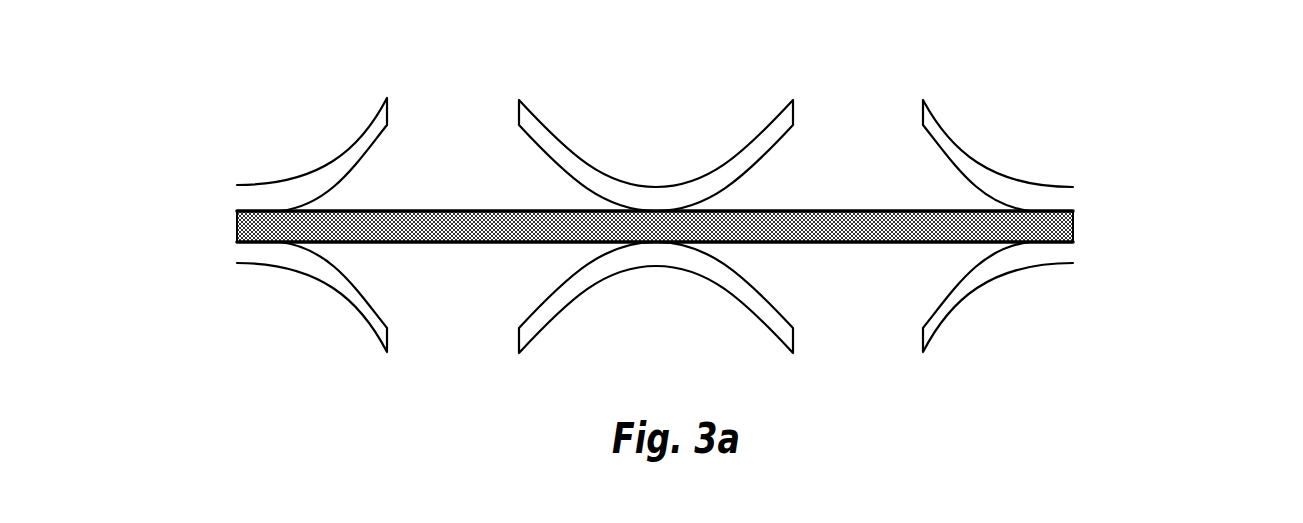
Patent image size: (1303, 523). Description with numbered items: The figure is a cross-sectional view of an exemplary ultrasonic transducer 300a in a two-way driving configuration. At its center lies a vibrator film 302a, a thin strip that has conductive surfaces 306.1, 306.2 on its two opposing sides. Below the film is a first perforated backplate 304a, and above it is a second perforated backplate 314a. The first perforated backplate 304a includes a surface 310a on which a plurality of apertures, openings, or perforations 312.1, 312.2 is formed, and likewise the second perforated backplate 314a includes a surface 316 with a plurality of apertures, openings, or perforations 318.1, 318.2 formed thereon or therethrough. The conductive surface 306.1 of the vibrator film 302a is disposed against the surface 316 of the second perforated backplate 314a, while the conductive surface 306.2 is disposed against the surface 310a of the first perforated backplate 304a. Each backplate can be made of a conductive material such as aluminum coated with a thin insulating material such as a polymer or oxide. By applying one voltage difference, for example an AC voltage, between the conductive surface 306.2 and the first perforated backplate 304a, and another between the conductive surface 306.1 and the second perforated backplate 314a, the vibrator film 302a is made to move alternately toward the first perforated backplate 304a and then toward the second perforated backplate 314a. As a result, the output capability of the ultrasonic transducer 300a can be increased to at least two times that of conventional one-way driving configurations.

The ultrasonic transducer 300a is at (208, 78).
The vibrator film 302a is at (742, 229).
The first perforated backplate 304a is at (208, 254).
The conductive surface 306.1 is at (1073, 211).
The conductive surface 306.2 is at (1073, 242).
The surface 310a is at (363, 294).
The perforation 312.1 is at (455, 373).
The perforation 312.2 is at (867, 373).
The second perforated backplate 314a is at (206, 202).
The surface 316 is at (355, 156).
The perforation 318.1 is at (450, 72).
The perforation 318.2 is at (855, 70).